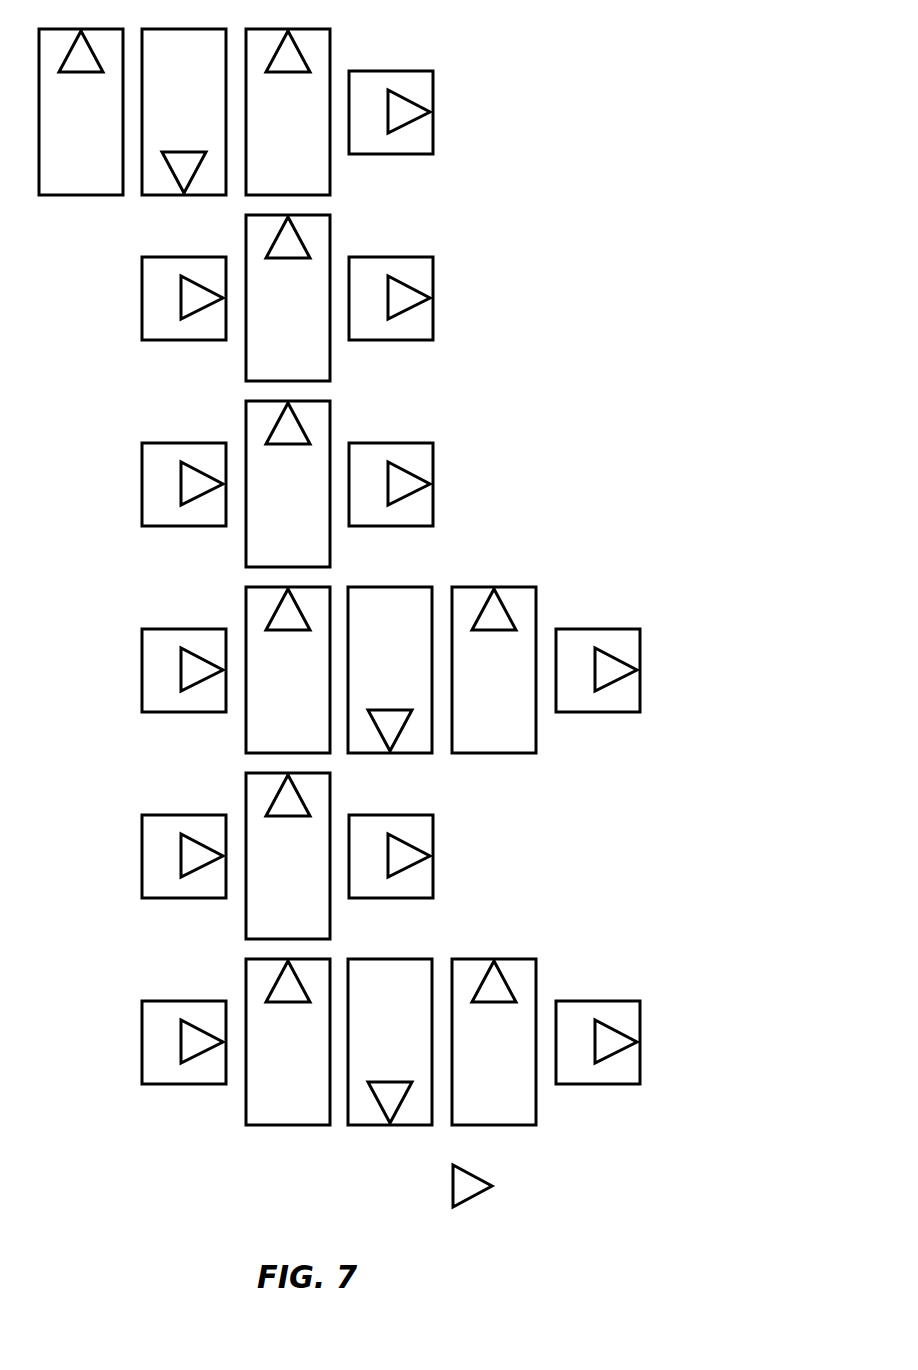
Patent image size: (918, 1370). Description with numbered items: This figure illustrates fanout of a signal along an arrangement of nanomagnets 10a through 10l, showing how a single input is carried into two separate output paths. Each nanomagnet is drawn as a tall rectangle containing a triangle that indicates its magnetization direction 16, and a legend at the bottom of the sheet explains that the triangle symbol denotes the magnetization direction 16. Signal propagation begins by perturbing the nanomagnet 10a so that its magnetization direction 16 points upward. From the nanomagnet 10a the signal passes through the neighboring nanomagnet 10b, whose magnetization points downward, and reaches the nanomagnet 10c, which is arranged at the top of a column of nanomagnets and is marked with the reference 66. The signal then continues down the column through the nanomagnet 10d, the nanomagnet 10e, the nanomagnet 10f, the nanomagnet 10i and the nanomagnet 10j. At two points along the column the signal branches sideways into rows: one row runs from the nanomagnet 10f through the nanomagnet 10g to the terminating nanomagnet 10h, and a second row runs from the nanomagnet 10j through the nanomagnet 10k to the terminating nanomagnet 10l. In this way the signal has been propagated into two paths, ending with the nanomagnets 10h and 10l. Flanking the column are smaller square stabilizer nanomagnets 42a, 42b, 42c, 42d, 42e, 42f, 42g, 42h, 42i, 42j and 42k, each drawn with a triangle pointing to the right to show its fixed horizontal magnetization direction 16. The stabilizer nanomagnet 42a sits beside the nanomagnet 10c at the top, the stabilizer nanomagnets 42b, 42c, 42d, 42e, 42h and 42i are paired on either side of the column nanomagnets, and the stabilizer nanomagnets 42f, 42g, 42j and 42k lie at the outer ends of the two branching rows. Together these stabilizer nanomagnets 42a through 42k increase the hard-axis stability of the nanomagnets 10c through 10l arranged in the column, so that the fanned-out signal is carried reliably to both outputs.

The nanomagnet 10a is at (55, 127).
The nanomagnet 10b is at (158, 127).
The nanomagnet 10c is at (262, 127).
The nanomagnet 10d is at (262, 313).
The nanomagnet 10e is at (262, 499).
The nanomagnet 10f is at (262, 685).
The nanomagnet 10g is at (364, 685).
The nanomagnet 10h is at (468, 685).
The nanomagnet 10i is at (262, 871).
The nanomagnet 10j is at (262, 1057).
The nanomagnet 10k is at (364, 1057).
The nanomagnet 10l is at (468, 1057).
The stabilizer nanomagnet 42a is at (433, 89).
The stabilizer nanomagnet 42b is at (142, 278).
The stabilizer nanomagnet 42c is at (433, 276).
The stabilizer nanomagnet 42d is at (142, 464).
The stabilizer nanomagnet 42e is at (433, 462).
The stabilizer nanomagnet 42f is at (142, 650).
The stabilizer nanomagnet 42g is at (640, 647).
The stabilizer nanomagnet 42h is at (142, 836).
The stabilizer nanomagnet 42i is at (433, 834).
The stabilizer nanomagnet 42j is at (142, 1022).
The stabilizer nanomagnet 42k is at (640, 1019).
The magnet array 66 is at (329, 50).
The magnetization direction 16 is at (602, 1196).